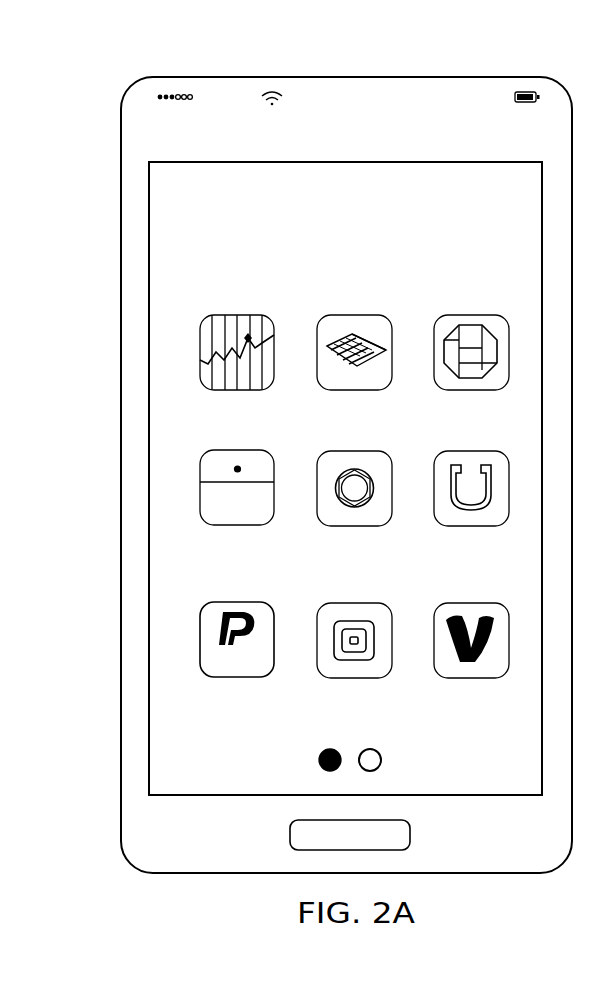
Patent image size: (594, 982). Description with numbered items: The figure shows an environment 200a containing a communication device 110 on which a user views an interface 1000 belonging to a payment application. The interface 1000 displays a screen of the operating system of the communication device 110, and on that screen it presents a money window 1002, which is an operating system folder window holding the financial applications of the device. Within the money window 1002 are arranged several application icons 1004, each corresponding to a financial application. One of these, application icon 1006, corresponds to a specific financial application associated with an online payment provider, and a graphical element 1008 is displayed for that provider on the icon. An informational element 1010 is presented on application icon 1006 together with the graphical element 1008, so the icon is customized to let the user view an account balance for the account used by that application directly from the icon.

The communication device 110 is at (118, 124).
The environment 200a is at (455, 60).
The interface 1000 is at (430, 219).
The money window 1002 is at (417, 274).
The application icons 1004 is at (178, 312).
The application icon 1006 is at (254, 644).
The graphical element 1008 is at (252, 624).
The informational element 1010 is at (273, 663).